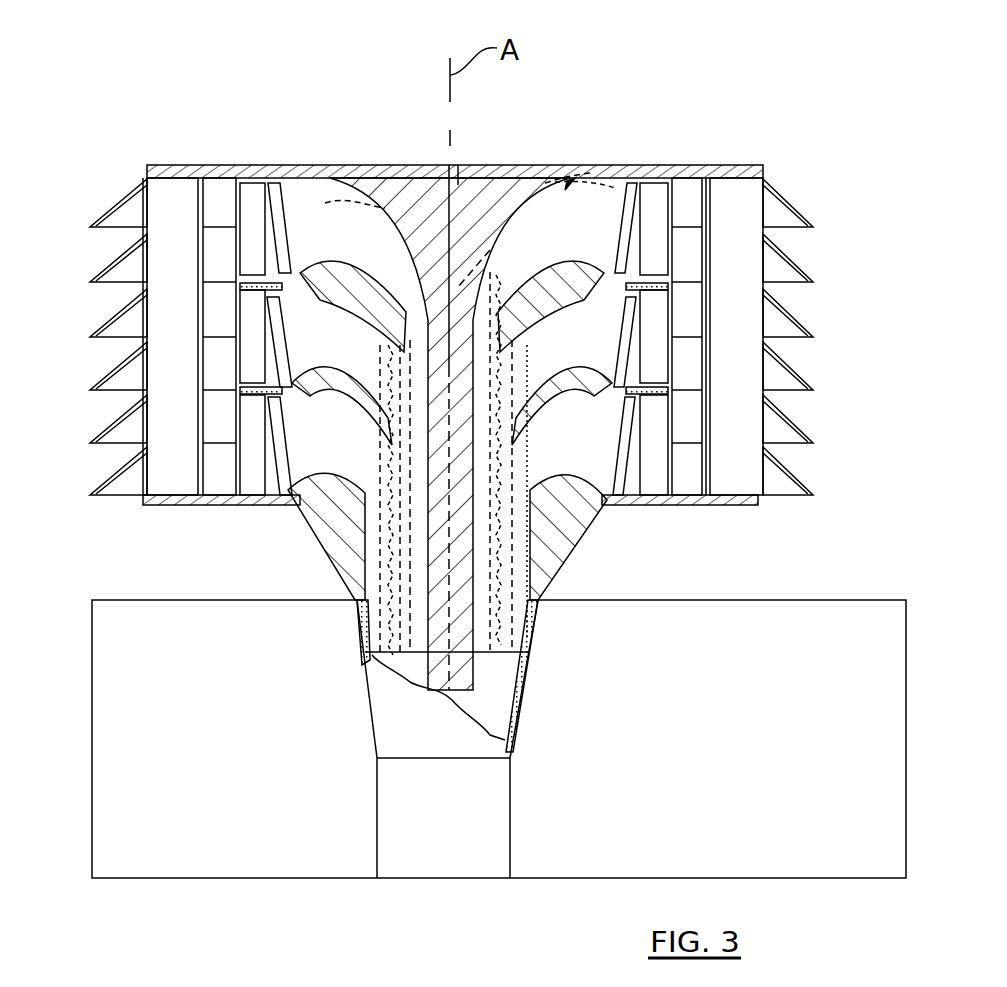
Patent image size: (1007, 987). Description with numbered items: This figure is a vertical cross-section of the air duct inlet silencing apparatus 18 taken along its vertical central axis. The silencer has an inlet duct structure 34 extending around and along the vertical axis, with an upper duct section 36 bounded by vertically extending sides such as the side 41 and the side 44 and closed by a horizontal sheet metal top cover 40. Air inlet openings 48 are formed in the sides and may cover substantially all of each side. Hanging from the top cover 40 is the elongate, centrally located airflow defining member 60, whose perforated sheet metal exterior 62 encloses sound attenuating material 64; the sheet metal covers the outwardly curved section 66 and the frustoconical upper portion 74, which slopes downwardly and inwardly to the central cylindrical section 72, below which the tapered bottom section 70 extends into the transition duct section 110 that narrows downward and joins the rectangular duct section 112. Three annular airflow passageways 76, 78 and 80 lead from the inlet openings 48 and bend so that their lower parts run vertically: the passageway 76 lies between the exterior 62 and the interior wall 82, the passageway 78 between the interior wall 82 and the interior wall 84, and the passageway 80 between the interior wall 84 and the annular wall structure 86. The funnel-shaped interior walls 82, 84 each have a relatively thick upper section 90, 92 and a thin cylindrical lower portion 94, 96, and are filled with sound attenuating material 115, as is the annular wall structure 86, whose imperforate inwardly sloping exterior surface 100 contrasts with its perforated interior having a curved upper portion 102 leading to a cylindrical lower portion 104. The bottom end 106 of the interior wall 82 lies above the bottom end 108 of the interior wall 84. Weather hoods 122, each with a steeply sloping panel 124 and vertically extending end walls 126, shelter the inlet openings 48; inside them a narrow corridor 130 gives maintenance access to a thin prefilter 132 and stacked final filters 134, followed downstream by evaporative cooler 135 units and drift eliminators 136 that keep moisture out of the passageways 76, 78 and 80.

The air duct inlet silencing apparatus 18 is at (598, 81).
The inlet duct structure 34 is at (533, 684).
The upper duct section 36 is at (344, 177).
The top cover 40 is at (422, 172).
The vertically extending side 41 is at (142, 217).
The vertically extending side 44 is at (767, 208).
The air inlet openings 48 is at (128, 447).
The airflow defining member 60 is at (492, 248).
The perforated sheet metal exterior 62 is at (385, 208).
The sound attenuating material 64 is at (458, 165).
The outwardly curved section 66 is at (562, 192).
The tapered bottom section 70 is at (465, 670).
The central cylindrical section 72 is at (422, 605).
The frustoconical upper portion 74 is at (392, 221).
The annular airflow passageway 76 is at (603, 248).
The annular airflow passageway 78 is at (609, 359).
The annular airflow passageway 80 is at (607, 468).
The interior wall 82 is at (380, 358).
The interior wall 84 is at (373, 447).
The annular wall structure 86 is at (330, 545).
The thick upper section 90 is at (381, 276).
The thick upper section 92 is at (335, 378).
The lower portion 94 is at (503, 558).
The lower portion 96 is at (517, 586).
The inwardly sloping exterior surface 100 is at (590, 522).
The curved upper portion 102 is at (322, 496).
The cylindrical lower portion 104 is at (385, 608).
The bottom end 106 is at (375, 632).
The bottom end 108 is at (363, 667).
The transition duct section 110 is at (520, 723).
The rectangular duct section 112 is at (512, 821).
The sound attenuating material 115 is at (330, 530).
The weather hoods 122 is at (120, 258).
The steeply sloping panel 124 is at (125, 372).
The vertically extending end walls 126 is at (125, 325).
The corridor 130 is at (166, 197).
The prefilter 132 is at (196, 187).
The final filters 134 is at (213, 190).
The evaporative cooler 135 is at (254, 193).
The drift eliminators 136 is at (293, 187).